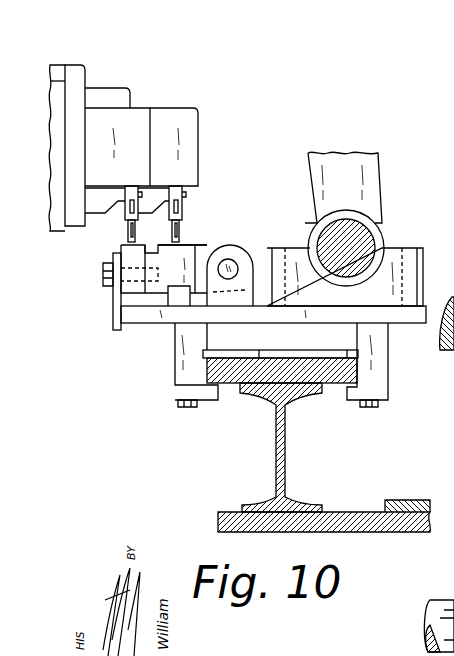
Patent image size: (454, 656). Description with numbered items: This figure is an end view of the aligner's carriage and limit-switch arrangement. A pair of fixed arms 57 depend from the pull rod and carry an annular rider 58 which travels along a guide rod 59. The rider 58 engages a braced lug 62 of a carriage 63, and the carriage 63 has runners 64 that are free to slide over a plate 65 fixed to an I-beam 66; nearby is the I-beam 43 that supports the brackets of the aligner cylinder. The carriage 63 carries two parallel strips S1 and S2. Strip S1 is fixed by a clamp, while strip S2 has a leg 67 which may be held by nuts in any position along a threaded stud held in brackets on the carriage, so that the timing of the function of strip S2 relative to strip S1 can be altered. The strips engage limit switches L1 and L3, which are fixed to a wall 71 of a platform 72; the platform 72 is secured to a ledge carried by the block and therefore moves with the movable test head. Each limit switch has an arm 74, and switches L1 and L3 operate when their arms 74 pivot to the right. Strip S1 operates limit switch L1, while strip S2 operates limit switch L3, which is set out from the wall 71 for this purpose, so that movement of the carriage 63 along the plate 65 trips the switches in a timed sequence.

The platform 72 is at (60, 70).
The wall 71 is at (81, 83).
The limit switch L1 is at (135, 118).
The limit switch L3 is at (199, 130).
The arm 74 is at (142, 223).
The strip S1 is at (130, 257).
The strip S2 is at (186, 246).
The leg 67 is at (238, 252).
The fixed arm 57 is at (369, 152).
The annular rider 58 is at (309, 236).
The guide rod 59 is at (362, 243).
The braced lug 62 is at (410, 262).
The carriage 63 is at (410, 318).
The runner 64 is at (378, 376).
The plate 65 is at (238, 378).
The I-beam 66 is at (283, 477).
The I-beam 43 is at (416, 488).